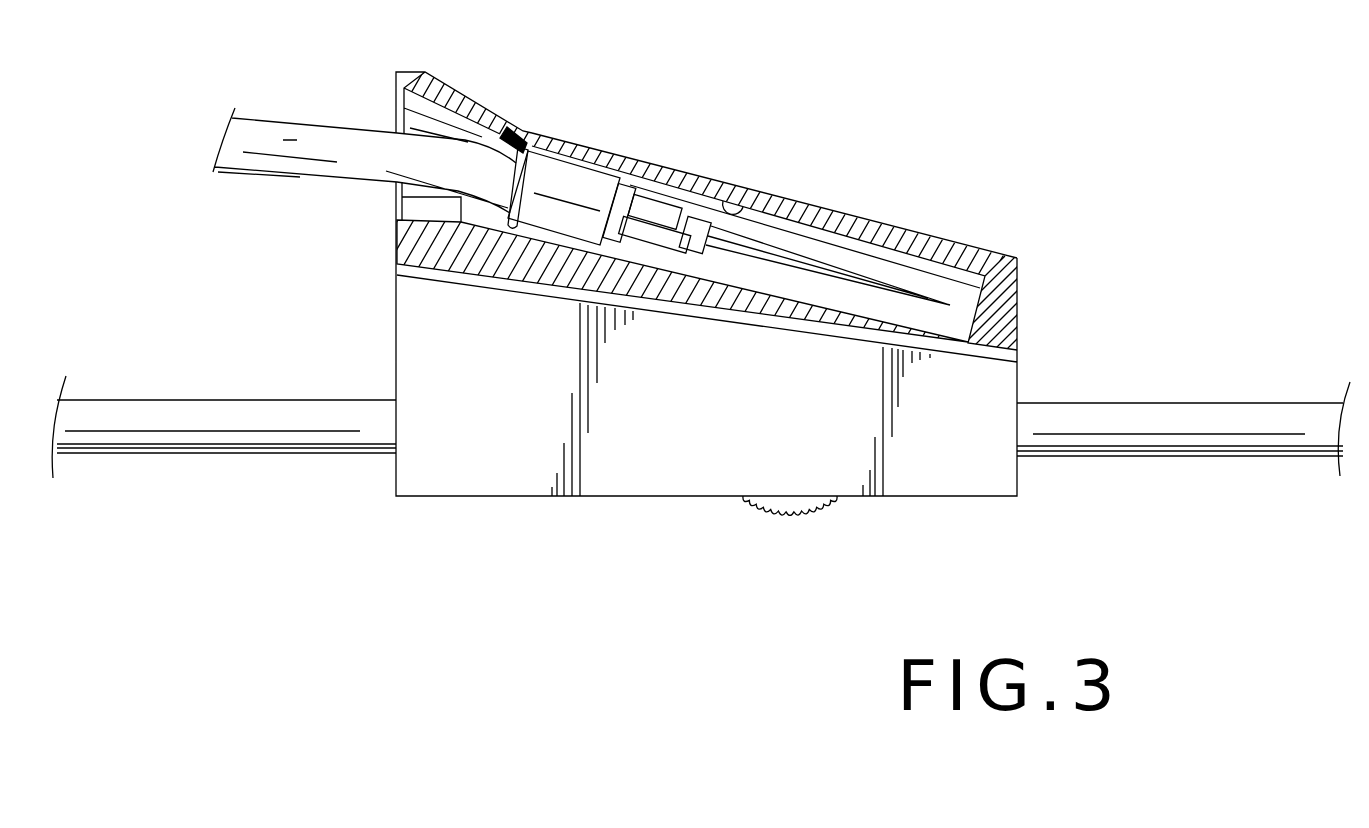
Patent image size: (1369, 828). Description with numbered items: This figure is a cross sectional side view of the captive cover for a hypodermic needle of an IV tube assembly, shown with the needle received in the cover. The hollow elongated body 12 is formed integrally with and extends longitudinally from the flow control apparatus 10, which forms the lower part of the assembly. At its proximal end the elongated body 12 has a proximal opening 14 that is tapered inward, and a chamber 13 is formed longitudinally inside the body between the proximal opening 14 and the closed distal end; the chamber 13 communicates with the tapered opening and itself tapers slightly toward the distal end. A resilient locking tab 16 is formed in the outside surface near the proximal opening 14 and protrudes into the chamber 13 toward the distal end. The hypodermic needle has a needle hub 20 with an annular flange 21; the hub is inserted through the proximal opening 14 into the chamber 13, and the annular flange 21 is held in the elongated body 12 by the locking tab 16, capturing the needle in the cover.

The flow control apparatus 10 is at (920, 490).
The elongated body 12 is at (865, 215).
The chamber 13 is at (740, 208).
The proximal opening 14 is at (405, 93).
The locking tab 16 is at (505, 138).
The needle hub 20 is at (590, 183).
The annular flange 21 is at (528, 163).